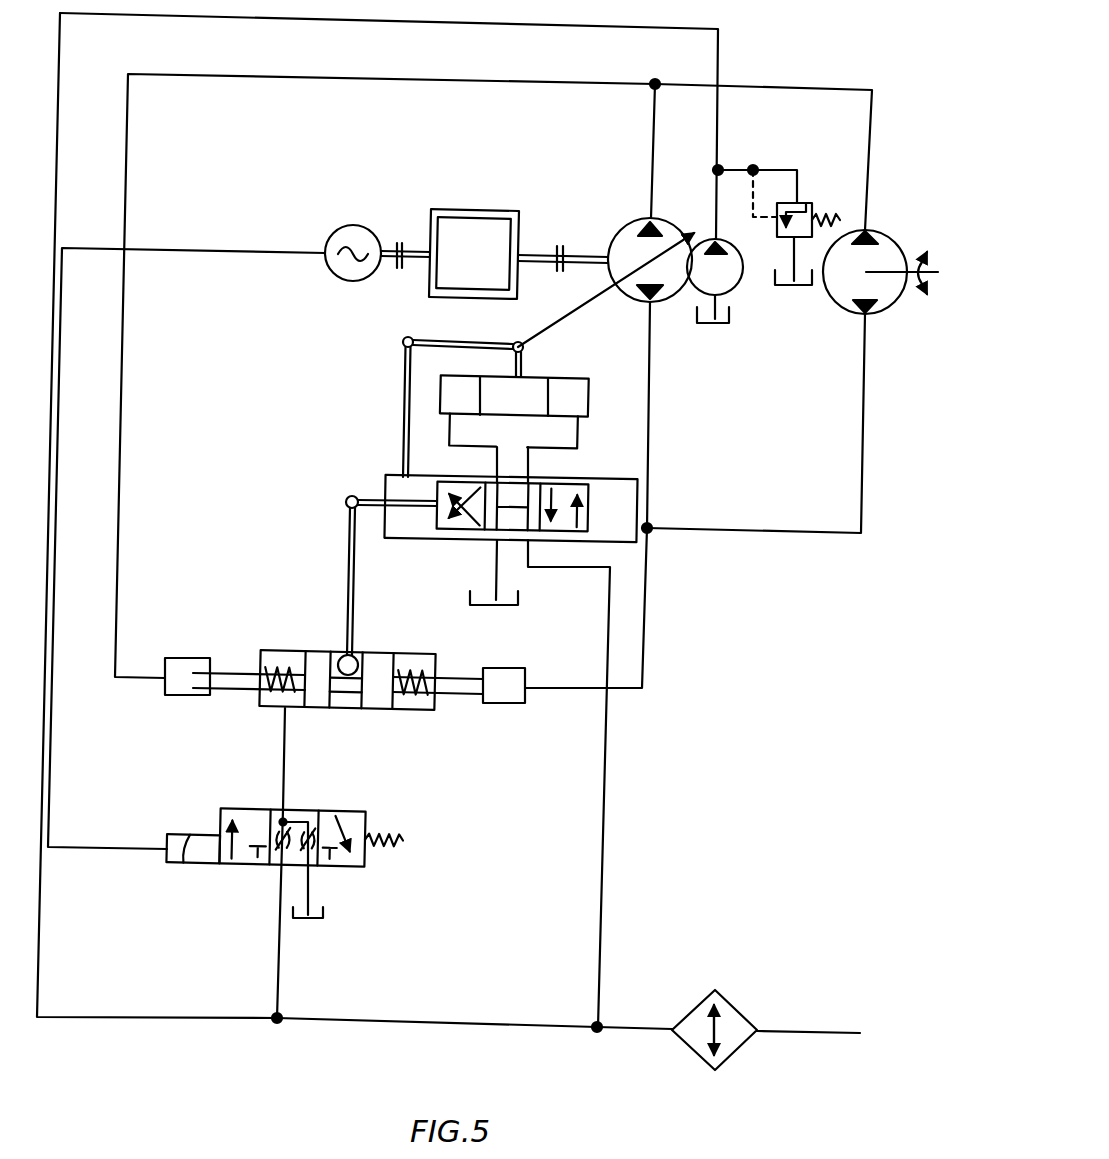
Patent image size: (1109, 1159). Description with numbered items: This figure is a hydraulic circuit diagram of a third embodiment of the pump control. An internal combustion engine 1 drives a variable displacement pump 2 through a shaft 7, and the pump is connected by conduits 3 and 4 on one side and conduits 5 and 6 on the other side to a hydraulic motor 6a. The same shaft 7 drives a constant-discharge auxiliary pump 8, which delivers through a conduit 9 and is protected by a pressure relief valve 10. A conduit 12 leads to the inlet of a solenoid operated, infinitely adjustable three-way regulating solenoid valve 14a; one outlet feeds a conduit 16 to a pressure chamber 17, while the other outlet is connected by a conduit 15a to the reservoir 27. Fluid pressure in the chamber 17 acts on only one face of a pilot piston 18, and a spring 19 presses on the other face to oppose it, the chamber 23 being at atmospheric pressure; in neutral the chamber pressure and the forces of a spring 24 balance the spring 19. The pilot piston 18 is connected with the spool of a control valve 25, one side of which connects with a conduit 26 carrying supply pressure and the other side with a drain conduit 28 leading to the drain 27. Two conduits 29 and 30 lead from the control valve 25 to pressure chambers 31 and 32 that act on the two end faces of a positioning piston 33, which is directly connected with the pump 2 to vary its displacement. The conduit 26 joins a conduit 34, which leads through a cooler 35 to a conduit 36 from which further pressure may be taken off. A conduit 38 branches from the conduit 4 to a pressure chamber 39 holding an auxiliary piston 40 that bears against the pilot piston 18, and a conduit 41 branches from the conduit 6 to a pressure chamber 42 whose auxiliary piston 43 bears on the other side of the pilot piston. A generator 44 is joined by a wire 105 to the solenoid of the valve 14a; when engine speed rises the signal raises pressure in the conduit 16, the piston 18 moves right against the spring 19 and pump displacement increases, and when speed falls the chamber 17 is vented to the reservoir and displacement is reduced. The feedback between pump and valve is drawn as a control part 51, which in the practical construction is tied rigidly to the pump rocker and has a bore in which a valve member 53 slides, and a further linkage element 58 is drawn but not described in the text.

The internal combustion engine 1 is at (446, 210).
The variable displacement pump 2 is at (617, 238).
The conduit 3 is at (654, 126).
The conduit 4 is at (783, 88).
The conduit 5 is at (650, 373).
The conduit 6 is at (708, 534).
The hydraulic motor 6a is at (884, 300).
The shaft 7 is at (580, 248).
The constant-discharge auxiliary pump 8 is at (728, 292).
The conduit 9 is at (463, 31).
The pressure relief valve 10 is at (798, 203).
The conduit 12 is at (277, 977).
The regulating solenoid valve 14a is at (231, 810).
The conduit 15a is at (308, 879).
The conduit 16 is at (285, 745).
The pressure chamber 17 is at (280, 658).
The pilot piston 18 is at (345, 654).
The spring 19 is at (410, 667).
The chamber 23 is at (397, 662).
The spring 24 is at (272, 711).
The control valve 25 is at (381, 472).
The conduit 26 is at (571, 568).
The reservoir 27 is at (520, 606).
The drain conduit 28 is at (492, 569).
The conduit 29 is at (498, 426).
The conduit 30 is at (580, 429).
The pressure chamber 31 is at (448, 398).
The pressure chamber 32 is at (575, 387).
The positioning piston 33 is at (523, 388).
The conduit 34 is at (522, 1022).
The cooler 35 is at (700, 1005).
The conduit 36 is at (800, 1030).
The conduit 38 is at (130, 171).
The pressure chamber 39 is at (182, 668).
The auxiliary piston 40 is at (233, 680).
The conduit 41 is at (645, 639).
The pressure chamber 42 is at (510, 694).
The auxiliary piston 43 is at (463, 680).
The generator 44 is at (355, 225).
The control part 51 is at (405, 386).
The valve member 53 is at (590, 502).
The lever linkage 58 is at (346, 540).
The wire 105 is at (212, 248).